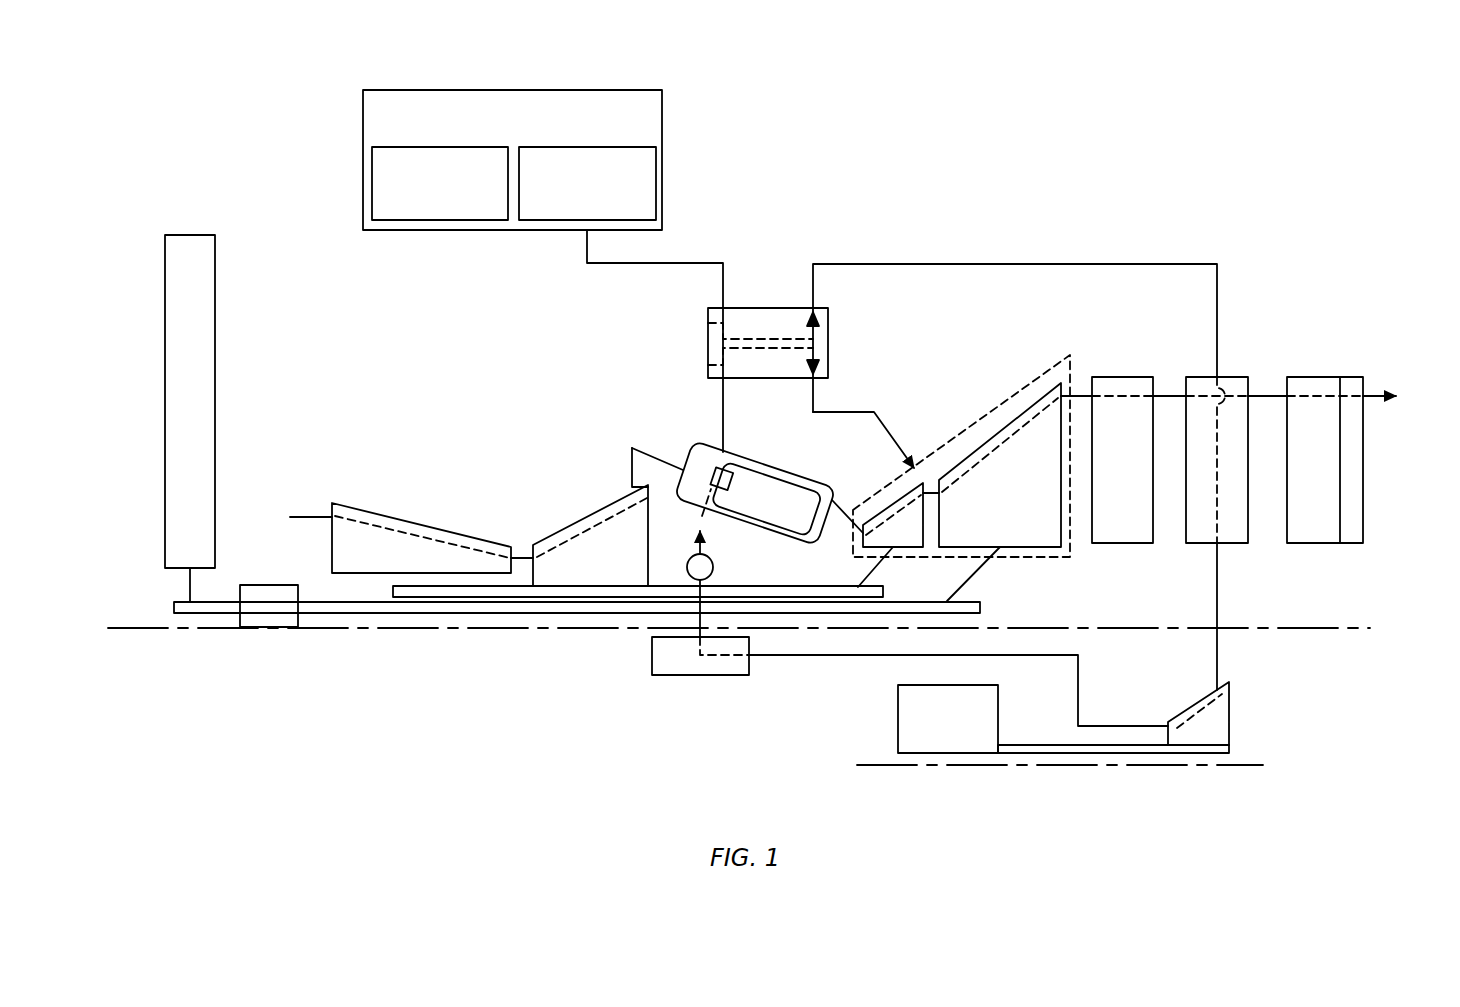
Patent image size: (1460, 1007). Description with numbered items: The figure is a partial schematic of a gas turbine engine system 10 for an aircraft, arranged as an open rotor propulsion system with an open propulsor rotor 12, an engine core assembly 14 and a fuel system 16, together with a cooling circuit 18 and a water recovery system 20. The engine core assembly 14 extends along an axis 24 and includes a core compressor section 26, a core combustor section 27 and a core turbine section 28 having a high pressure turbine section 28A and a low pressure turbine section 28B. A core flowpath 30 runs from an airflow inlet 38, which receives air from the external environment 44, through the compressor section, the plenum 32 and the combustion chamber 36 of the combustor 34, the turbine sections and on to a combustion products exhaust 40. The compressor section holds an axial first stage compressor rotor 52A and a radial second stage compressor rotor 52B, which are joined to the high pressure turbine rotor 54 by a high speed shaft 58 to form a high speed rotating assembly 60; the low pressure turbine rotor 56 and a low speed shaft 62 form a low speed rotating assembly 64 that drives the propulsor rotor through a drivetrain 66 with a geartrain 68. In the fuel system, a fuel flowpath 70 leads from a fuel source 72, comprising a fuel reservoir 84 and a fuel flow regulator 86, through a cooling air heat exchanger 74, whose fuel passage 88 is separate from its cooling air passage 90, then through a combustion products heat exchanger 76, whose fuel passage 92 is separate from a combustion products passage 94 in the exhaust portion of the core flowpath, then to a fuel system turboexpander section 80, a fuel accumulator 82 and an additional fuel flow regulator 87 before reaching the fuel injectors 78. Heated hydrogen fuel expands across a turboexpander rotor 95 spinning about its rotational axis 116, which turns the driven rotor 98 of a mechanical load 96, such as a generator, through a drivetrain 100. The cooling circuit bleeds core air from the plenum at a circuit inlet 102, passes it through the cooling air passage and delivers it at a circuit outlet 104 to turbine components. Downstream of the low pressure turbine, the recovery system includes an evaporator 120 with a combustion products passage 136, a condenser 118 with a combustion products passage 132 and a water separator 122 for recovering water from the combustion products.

The gas turbine engine system 10 is at (185, 107).
The open propulsor rotor 12 is at (167, 450).
The engine core assembly 14 is at (460, 690).
The fuel system 16 is at (684, 149).
The cooling circuit 18 is at (858, 388).
The water recovery system 20 is at (1331, 339).
The axis 24 is at (125, 630).
The core compressor section 26 is at (508, 491).
The core combustor section 27 is at (678, 418).
The core turbine section 28 is at (933, 422).
The high pressure turbine section 28A is at (883, 496).
The low pressure turbine section 28B is at (1027, 394).
The core flowpath 30 is at (630, 473).
The plenum 32 is at (698, 455).
The combustor 34 is at (790, 470).
The combustion chamber 36 is at (763, 513).
The airflow inlet 38 is at (291, 517).
The combustion products exhaust 40 is at (1400, 396).
The external environment 44 is at (81, 358).
The first stage compressor rotor 52A is at (362, 573).
The second stage compressor rotor 52B is at (557, 587).
The high pressure turbine rotor 54 is at (862, 534).
The low pressure turbine rotor 56 is at (1020, 557).
The high speed shaft 58 is at (460, 597).
The high speed rotating assembly 60 is at (355, 498).
The low speed shaft 62 is at (330, 613).
The low speed rotating assembly 64 is at (1012, 607).
The drivetrain 66 is at (248, 643).
The geartrain 68 is at (254, 618).
The fuel flowpath 70 is at (875, 262).
The fuel source 72 is at (564, 124).
The fuel-cooling air heat exchanger 74 is at (768, 308).
The fuel-combustion products heat exchanger 76 is at (1240, 377).
The fuel injector 78 is at (712, 482).
The fuel system turboexpander section 80 is at (1257, 718).
The fuel accumulator 82 is at (693, 675).
The fuel reservoir 84 is at (426, 207).
The fuel flow regulator 86 is at (573, 207).
The additional fuel flow regulator 87 is at (687, 568).
The internal fuel passage 88 is at (707, 325).
The internal cooling air passage 90 is at (707, 360).
The internal fuel passage 92 is at (1217, 520).
The internal combustion products passage 94 is at (1203, 396).
The fuel system turboexpander rotor 95 is at (1230, 700).
The mechanical load 96 is at (878, 726).
The driven rotor 98 is at (933, 731).
The drivetrain 100 is at (1067, 753).
The circuit inlet 102 is at (728, 446).
The circuit outlet 104 is at (920, 462).
The rotational axis 116 is at (1232, 767).
The condensing heat exchanger 118 is at (1313, 543).
The evaporating heat exchanger 120 is at (1110, 543).
The water separator 122 is at (1364, 470).
The internal combustion products passage 132 is at (1318, 396).
The internal combustion products passage 136 is at (1122, 396).